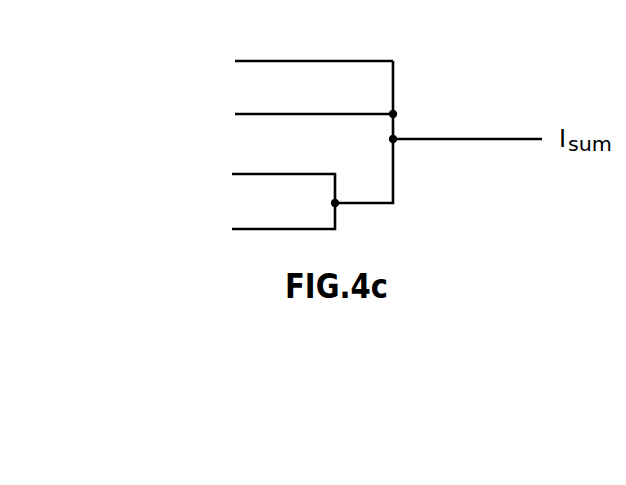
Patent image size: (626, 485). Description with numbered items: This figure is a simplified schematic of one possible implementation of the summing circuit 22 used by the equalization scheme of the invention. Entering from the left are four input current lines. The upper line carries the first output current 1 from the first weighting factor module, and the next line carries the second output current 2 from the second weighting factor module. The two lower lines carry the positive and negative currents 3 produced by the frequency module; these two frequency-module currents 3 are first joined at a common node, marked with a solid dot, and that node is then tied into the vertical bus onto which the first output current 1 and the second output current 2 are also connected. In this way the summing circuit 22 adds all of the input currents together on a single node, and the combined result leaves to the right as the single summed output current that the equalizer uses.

The summing circuit 22 is at (448, 91).
The first output current branch Iout1 1 is at (283, 52).
The second output current branch Iout2 2 is at (283, 107).
The third output current branches Ioutp3 / Ioutn3 3 is at (250, 193).